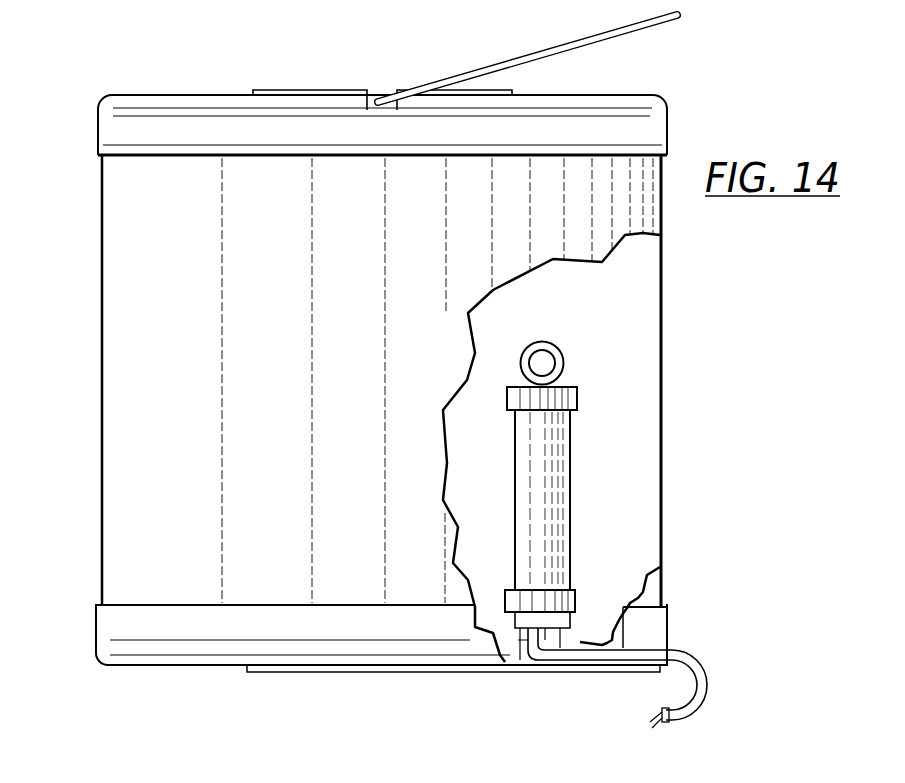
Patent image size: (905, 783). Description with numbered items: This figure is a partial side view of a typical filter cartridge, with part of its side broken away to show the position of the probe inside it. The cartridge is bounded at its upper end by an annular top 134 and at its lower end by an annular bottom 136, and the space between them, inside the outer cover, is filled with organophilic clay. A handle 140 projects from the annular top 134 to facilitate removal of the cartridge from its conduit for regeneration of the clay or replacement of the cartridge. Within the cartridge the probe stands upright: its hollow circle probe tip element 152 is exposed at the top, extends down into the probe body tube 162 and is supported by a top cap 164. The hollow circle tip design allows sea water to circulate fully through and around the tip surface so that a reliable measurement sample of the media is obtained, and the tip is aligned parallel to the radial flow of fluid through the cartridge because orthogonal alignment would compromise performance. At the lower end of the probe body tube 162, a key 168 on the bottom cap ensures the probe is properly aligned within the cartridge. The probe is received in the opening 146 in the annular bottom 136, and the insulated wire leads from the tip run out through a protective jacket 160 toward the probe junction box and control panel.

The annular top 134 is at (614, 95).
The annular bottom 136 is at (95, 638).
The handle 140 is at (507, 63).
The opening 146 is at (524, 630).
The hollow circle probe tip element 152 is at (565, 357).
The protective jacket 160 is at (600, 662).
The probe body tube 162 is at (572, 495).
The top cap 164 is at (580, 392).
The key 168 is at (575, 625).